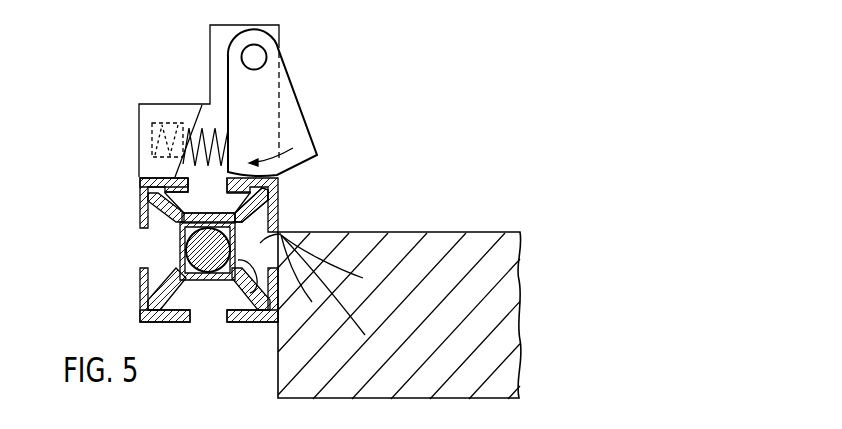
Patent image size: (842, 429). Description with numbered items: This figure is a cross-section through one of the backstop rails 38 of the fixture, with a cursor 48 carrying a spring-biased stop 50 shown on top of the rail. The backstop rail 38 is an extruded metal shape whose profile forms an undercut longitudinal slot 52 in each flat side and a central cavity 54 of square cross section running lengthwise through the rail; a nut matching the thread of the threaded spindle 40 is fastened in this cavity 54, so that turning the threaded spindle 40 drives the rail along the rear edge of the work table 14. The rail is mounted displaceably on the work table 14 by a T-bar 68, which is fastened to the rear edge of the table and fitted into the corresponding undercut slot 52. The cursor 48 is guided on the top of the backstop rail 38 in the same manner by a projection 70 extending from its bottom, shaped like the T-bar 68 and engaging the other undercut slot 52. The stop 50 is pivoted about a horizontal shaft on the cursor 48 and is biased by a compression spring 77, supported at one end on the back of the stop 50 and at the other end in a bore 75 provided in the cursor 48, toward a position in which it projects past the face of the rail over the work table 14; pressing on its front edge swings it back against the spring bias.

The work table 14 is at (486, 318).
The backstop rail 38 is at (128, 187).
The threaded spindle 40 is at (206, 251).
The cursor 48 is at (166, 112).
The stop 50 is at (290, 118).
The undercut longitudinal slot 52 is at (140, 218).
The central cavity 54 is at (268, 224).
The T-bar 68 is at (282, 235).
The projection 70 is at (219, 203).
The bore 75 is at (140, 161).
The compression spring 77 is at (230, 150).